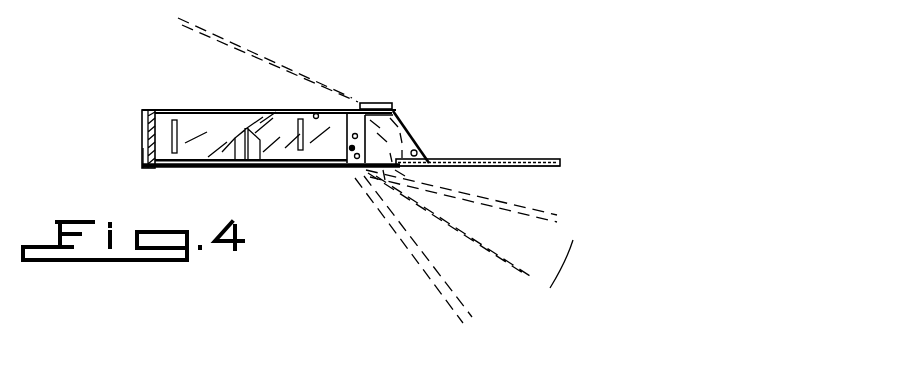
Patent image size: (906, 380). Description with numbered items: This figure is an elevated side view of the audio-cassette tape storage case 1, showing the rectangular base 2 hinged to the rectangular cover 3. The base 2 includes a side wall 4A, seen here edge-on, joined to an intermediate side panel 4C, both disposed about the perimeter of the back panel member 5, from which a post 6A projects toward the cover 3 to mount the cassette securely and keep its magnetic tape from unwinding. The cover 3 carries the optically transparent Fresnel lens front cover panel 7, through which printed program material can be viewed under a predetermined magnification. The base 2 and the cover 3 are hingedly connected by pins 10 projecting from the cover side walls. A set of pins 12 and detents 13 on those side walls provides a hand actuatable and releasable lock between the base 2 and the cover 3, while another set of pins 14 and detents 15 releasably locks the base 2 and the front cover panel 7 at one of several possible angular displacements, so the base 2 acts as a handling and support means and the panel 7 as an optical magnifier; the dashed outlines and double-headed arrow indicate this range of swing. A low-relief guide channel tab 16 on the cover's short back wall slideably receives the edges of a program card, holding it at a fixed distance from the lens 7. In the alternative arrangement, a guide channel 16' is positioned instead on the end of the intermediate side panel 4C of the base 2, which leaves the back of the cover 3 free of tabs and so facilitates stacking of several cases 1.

The audio-cassette tape storage case 1 is at (428, 94).
The rectangular base 2 is at (226, 102).
The rectangular cover 3 is at (542, 149).
The side wall 4A is at (205, 135).
The intermediate side panel 4C is at (146, 130).
The back panel member 5 is at (194, 174).
The post 6A is at (235, 138).
The optically transparent front cover panel 7 is at (480, 160).
The pins 10 is at (353, 138).
The pins 12 is at (318, 113).
The detents 13 is at (416, 151).
The pins 14 is at (357, 159).
The detents 15 is at (350, 151).
The guide channel tab 16 is at (381, 79).
The guide channel 16' is at (111, 168).